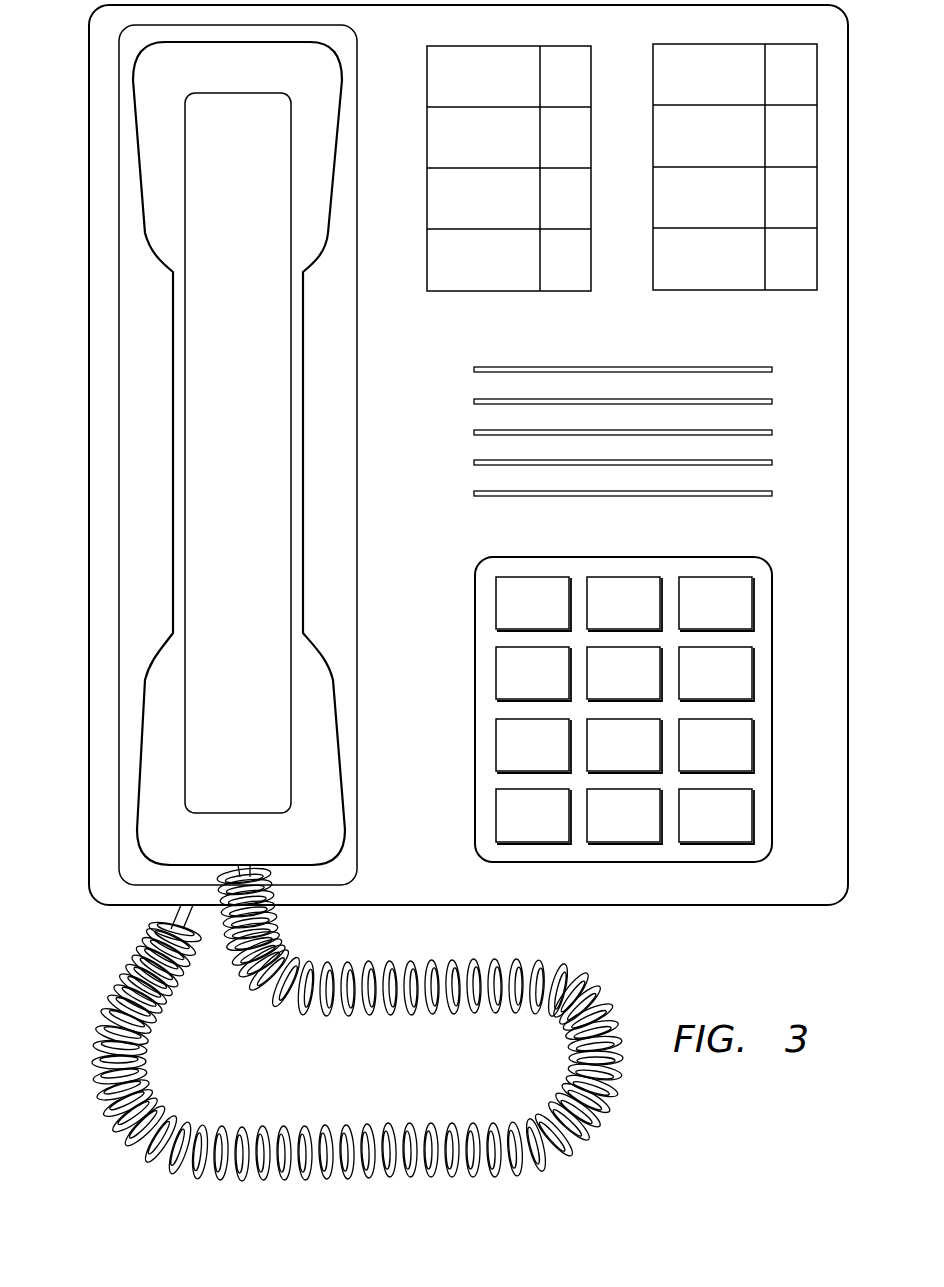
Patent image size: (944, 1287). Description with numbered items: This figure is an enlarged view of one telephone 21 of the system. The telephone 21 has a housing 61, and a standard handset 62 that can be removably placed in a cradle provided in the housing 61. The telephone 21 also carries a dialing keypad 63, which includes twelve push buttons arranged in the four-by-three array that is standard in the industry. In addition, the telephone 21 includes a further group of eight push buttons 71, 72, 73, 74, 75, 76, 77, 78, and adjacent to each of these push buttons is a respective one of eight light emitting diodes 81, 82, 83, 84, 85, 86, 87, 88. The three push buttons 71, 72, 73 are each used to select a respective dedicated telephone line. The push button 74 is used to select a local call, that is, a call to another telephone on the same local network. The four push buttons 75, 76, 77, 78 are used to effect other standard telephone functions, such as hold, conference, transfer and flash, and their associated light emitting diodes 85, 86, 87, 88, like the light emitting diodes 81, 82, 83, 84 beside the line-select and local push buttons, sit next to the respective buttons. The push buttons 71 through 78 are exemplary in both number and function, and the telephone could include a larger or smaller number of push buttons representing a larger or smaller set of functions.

The telephone 21 is at (89, 205).
The housing 61 is at (89, 493).
The handset 62 is at (254, 457).
The dialing keypad 63 is at (461, 560).
The push button 71 is at (427, 77).
The push button 72 is at (427, 139).
The push button 73 is at (427, 200).
The push button 74 is at (427, 261).
The push button 75 is at (653, 75).
The push button 76 is at (653, 137).
The push button 77 is at (653, 198).
The push button 78 is at (653, 259).
The light emitting diode 81 is at (578, 88).
The light emitting diode 82 is at (578, 149).
The light emitting diode 83 is at (578, 210).
The light emitting diode 84 is at (578, 271).
The light emitting diode 85 is at (804, 86).
The light emitting diode 86 is at (804, 148).
The light emitting diode 87 is at (804, 209).
The light emitting diode 88 is at (804, 270).